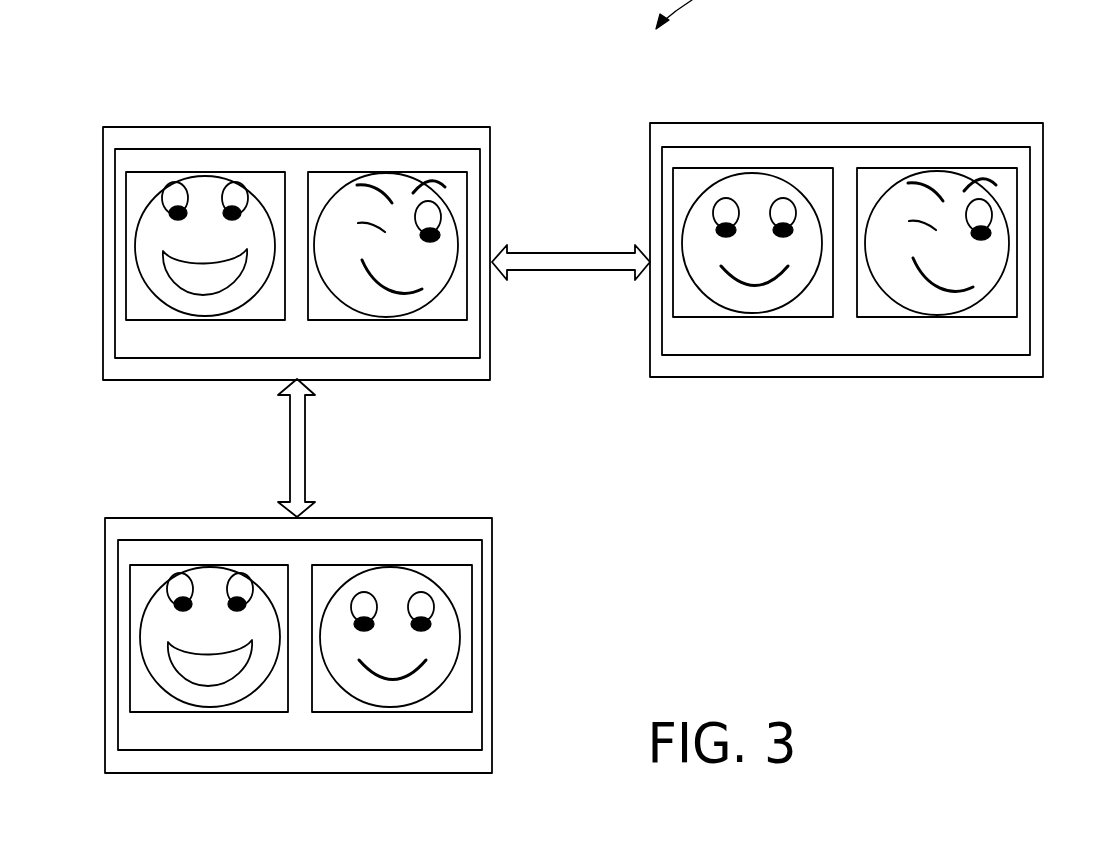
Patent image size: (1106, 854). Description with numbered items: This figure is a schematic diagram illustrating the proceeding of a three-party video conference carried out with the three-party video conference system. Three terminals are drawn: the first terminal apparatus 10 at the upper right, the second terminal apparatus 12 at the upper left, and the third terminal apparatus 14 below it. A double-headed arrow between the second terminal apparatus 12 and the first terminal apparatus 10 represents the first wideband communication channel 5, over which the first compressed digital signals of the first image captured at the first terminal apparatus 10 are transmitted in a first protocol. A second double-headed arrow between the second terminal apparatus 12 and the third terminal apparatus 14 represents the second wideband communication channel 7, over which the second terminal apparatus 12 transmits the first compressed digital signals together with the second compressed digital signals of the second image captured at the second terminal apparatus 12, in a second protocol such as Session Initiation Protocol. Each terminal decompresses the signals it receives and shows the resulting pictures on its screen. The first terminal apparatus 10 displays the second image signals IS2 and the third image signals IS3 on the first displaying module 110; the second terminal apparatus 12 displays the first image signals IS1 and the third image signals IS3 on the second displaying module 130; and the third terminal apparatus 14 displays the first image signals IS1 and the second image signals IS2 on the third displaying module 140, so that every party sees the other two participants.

The first wideband communication channel 5 is at (565, 253).
The second wideband communication channel 7 is at (305, 457).
The first terminal apparatus 10 is at (910, 122).
The second terminal apparatus 12 is at (363, 126).
The third terminal apparatus 14 is at (370, 517).
The first displaying module 110 is at (785, 146).
The second displaying module 130 is at (217, 148).
The third displaying module 140 is at (170, 540).
The first image signals IS1 is at (143, 172).
The second image signals IS2 is at (708, 167).
The third image signals IS3 is at (430, 172).